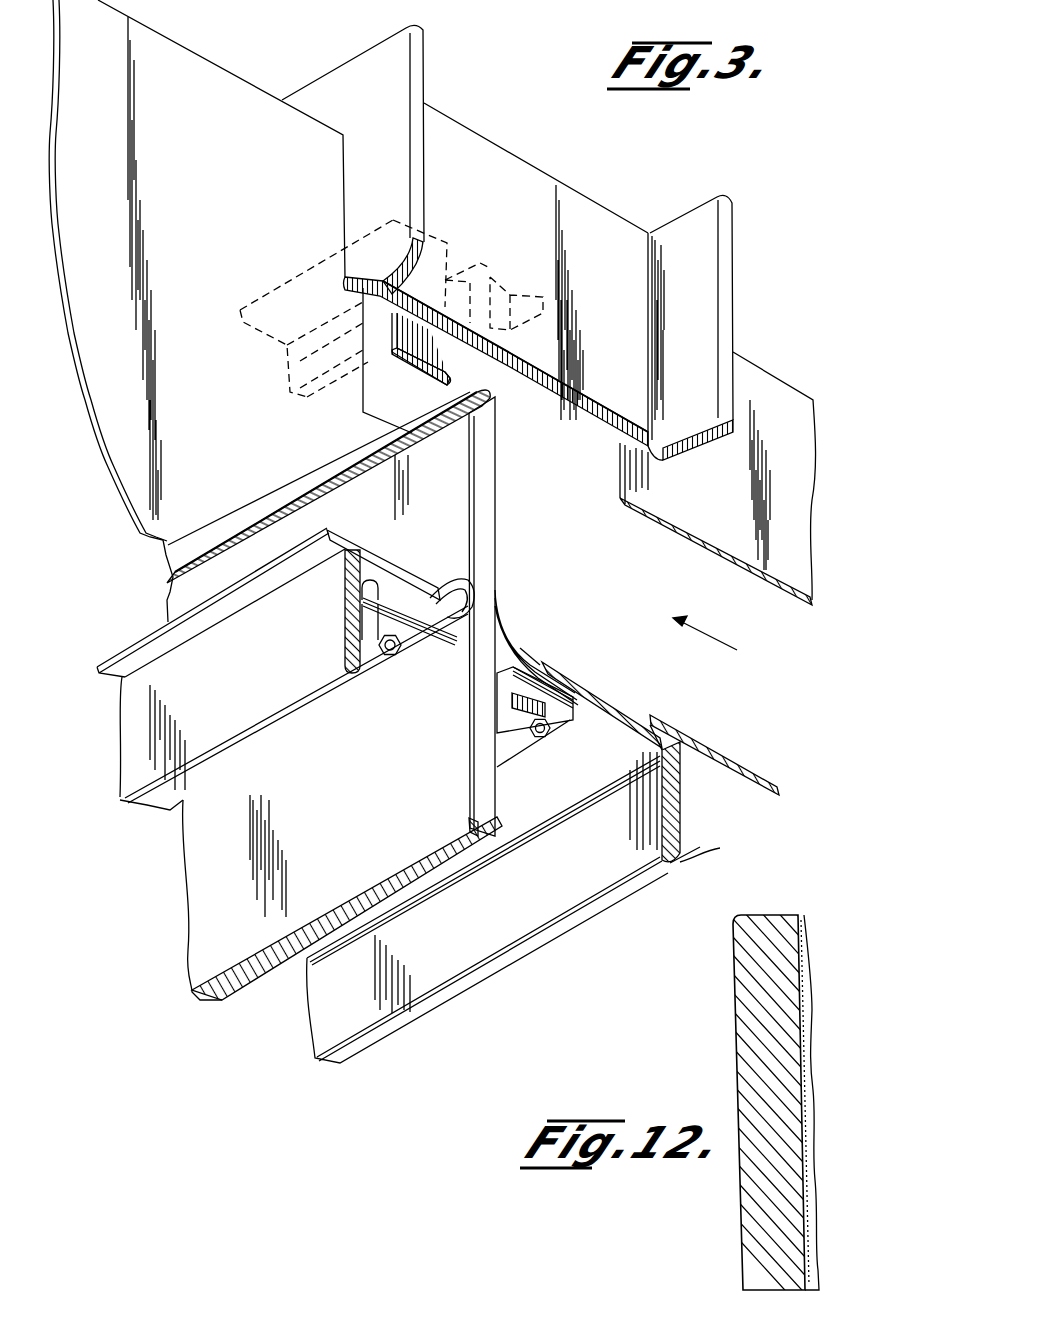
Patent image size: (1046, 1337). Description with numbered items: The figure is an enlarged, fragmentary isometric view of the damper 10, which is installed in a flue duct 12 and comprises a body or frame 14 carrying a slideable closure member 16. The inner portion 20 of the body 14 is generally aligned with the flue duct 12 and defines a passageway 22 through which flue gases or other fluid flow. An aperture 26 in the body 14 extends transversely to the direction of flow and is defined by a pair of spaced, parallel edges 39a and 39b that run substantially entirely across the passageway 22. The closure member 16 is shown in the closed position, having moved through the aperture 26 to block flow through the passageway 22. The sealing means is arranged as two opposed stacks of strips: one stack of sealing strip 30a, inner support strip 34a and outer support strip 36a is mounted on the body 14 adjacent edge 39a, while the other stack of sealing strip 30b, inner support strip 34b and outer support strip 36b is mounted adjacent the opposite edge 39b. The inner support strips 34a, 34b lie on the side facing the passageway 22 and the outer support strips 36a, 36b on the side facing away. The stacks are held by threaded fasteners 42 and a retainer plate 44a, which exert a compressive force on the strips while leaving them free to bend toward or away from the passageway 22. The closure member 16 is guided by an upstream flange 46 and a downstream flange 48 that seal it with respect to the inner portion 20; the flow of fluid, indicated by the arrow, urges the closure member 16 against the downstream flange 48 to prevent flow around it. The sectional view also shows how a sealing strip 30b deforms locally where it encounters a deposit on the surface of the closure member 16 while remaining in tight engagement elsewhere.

In FIG. 3, the damper 10 is at (498, 138).
In FIG. 3, the flue duct 12 is at (231, 87).
In FIG. 3, the body or frame 14 is at (288, 636).
In FIG. 3, the slideable closure member 16 is at (372, 804).
In FIG. 12, the slideable closure member 16 is at (733, 972).
In FIG. 3, the inner portion 20 is at (601, 220).
In FIG. 3, the passageway 22 is at (553, 521).
In FIG. 3, the aperture 26 is at (530, 660).
In FIG. 3, the sealing strip 30a is at (463, 580).
In FIG. 3, the sealing strip 30b is at (502, 593).
In FIG. 12, the sealing strip 30b is at (806, 962).
In FIG. 3, the inner support strip 34a is at (455, 641).
In FIG. 3, the inner support strip 34b is at (518, 647).
In FIG. 3, the outer support strip 36a is at (327, 713).
In FIG. 3, the outer support strip 36b is at (523, 723).
In FIG. 3, the aperture edge 39a is at (433, 597).
In FIG. 3, the aperture edge 39b is at (540, 667).
In FIG. 3, the threaded fastener 42 is at (378, 656).
In FIG. 3, the retainer plate 44a is at (367, 630).
In FIG. 3, the upstream flange 46 is at (520, 287).
In FIG. 3, the downstream flange 48 is at (437, 240).